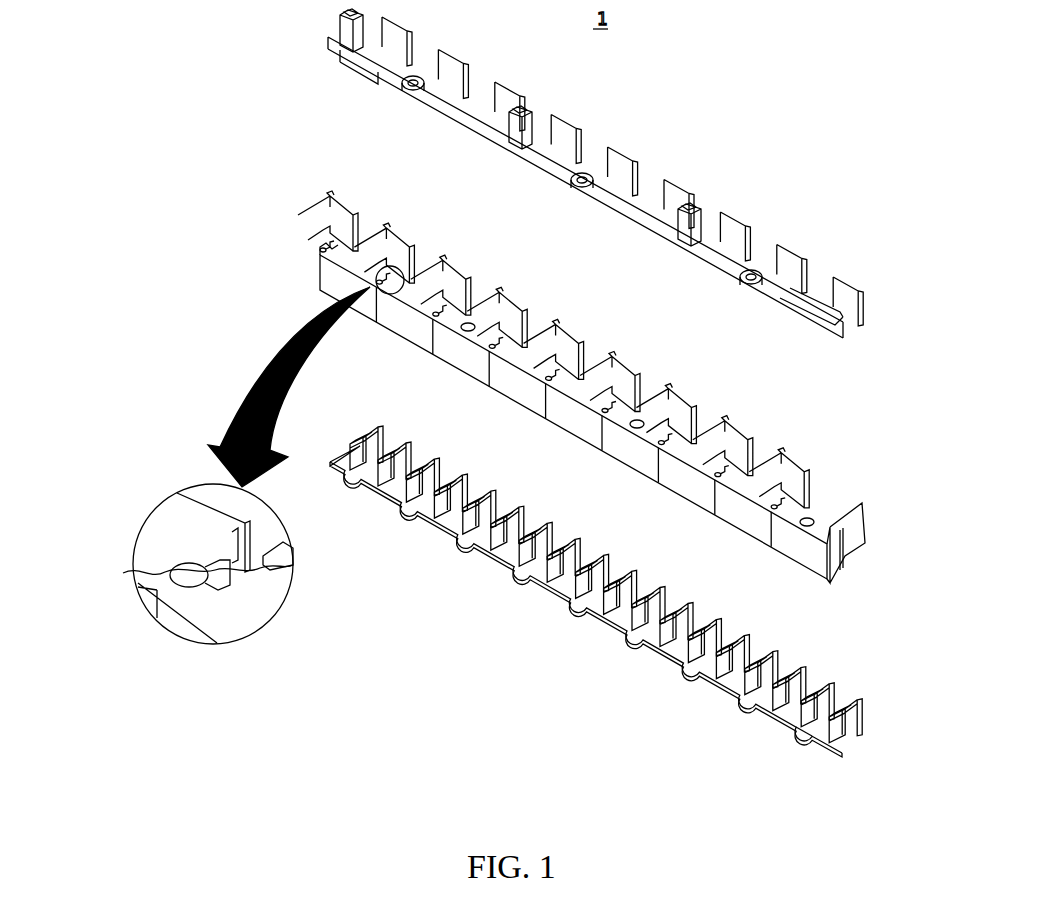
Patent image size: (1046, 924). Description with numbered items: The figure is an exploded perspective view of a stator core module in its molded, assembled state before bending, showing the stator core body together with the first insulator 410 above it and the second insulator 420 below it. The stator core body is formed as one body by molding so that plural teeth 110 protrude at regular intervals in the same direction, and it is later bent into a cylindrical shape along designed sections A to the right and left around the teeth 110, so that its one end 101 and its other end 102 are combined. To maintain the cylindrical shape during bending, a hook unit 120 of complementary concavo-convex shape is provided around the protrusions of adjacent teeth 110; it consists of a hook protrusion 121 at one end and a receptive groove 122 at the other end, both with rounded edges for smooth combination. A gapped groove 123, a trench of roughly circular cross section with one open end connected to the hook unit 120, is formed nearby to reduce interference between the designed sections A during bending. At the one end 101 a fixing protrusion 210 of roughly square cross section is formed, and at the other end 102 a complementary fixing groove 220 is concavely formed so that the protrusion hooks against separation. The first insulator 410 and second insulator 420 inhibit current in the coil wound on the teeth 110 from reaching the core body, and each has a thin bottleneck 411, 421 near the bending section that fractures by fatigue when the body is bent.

The one end of the stator core body 101 is at (582, 396).
The other end of the stator core body 102 is at (827, 567).
The teeth 110 is at (824, 502).
The hook unit 120 is at (212, 584).
The hook protrusion 121 is at (236, 536).
The receptive groove 122 is at (290, 565).
The gapped groove 123 is at (170, 572).
The fixing protrusion 210 is at (322, 245).
The fixing groove 220 is at (845, 552).
The first insulator 410 is at (840, 306).
The bottleneck 411 is at (370, 90).
The second insulator 420 is at (862, 712).
The bottleneck 421 is at (772, 737).
The designed section A is at (530, 424).